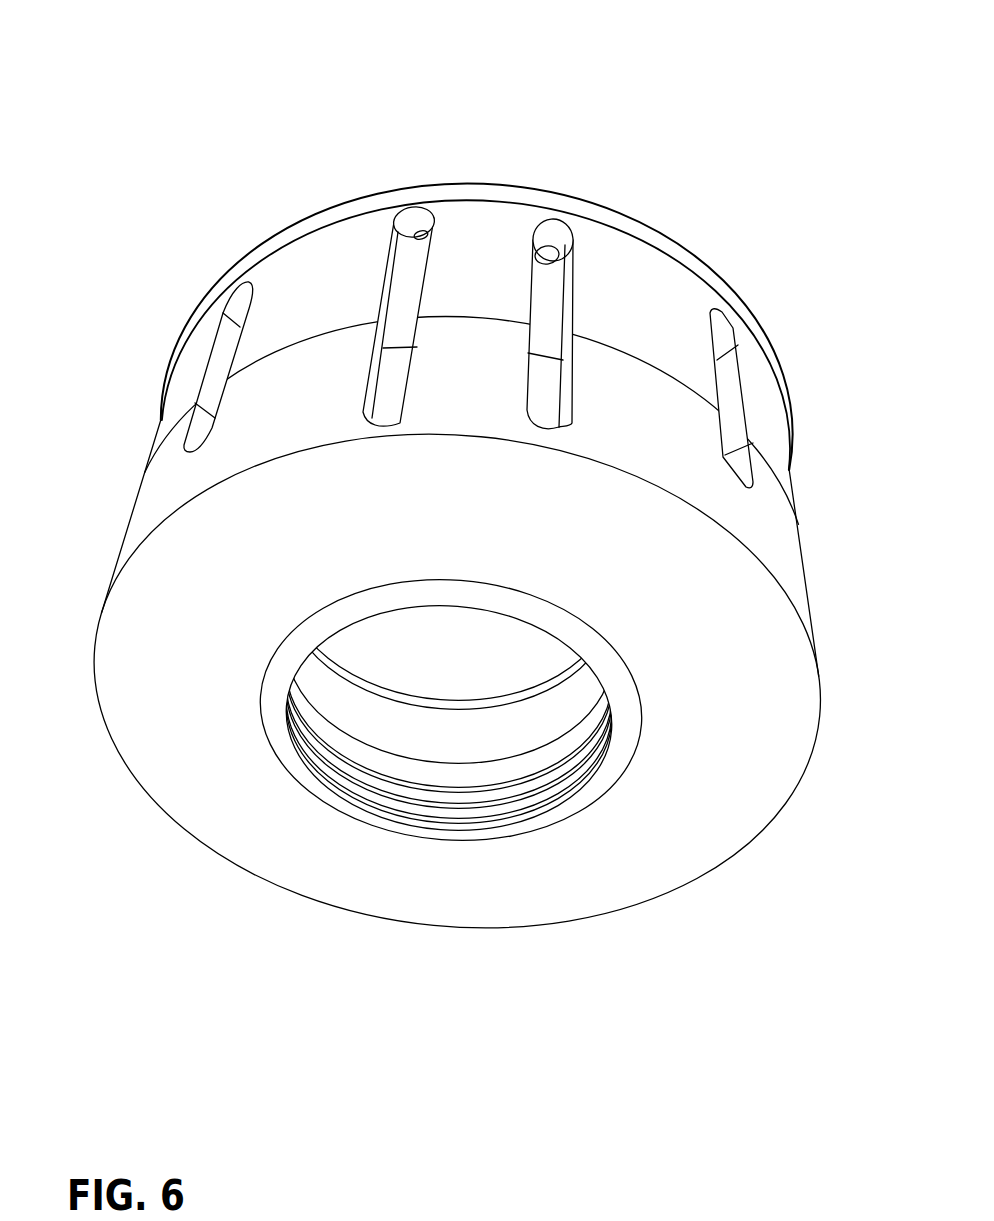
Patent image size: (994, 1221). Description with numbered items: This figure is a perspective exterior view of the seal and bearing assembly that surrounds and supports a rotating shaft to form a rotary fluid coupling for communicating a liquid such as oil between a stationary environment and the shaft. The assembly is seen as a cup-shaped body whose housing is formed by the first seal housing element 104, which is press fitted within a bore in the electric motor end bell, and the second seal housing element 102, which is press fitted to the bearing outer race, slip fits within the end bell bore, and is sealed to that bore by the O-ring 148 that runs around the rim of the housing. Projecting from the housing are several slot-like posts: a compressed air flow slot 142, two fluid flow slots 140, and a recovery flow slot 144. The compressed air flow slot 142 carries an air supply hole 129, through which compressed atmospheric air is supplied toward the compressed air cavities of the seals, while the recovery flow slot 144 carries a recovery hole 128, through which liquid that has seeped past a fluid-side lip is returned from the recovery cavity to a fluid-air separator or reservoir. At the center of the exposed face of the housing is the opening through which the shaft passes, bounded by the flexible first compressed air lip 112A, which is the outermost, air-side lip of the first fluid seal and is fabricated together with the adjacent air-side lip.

The second seal housing element 102 is at (335, 243).
The first seal housing element 104 is at (143, 523).
The first compressed air lip 112A is at (317, 632).
The recovery hole 128 is at (552, 255).
The air supply hole 129 is at (421, 238).
The fluid flow slot 140 is at (238, 293).
The compressed air flow slot 142 is at (429, 245).
The recovery flow slot 144 is at (615, 255).
The O-ring 148 is at (192, 312).